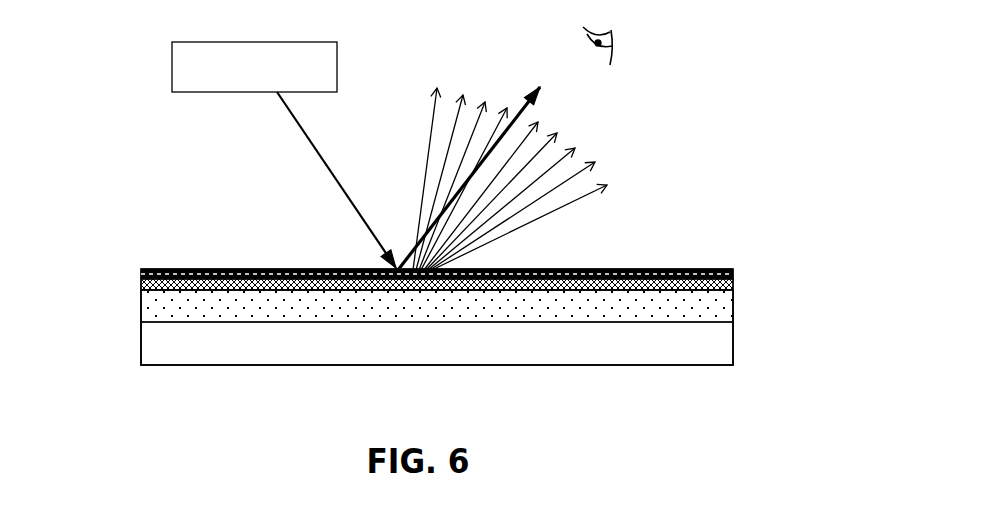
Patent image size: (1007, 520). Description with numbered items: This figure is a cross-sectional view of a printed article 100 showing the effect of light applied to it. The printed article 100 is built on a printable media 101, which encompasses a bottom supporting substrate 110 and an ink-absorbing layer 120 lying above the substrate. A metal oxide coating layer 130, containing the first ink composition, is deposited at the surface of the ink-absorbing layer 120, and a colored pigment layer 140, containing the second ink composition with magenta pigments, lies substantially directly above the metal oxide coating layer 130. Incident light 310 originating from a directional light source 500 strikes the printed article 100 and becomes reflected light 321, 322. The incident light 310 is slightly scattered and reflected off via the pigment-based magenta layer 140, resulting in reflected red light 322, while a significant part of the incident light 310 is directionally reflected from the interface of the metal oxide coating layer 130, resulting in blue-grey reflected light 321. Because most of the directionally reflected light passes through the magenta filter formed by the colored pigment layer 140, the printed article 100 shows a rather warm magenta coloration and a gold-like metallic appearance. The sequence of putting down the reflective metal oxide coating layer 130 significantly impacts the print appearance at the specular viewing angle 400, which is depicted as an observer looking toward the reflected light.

The printed article 100 is at (806, 163).
The printable media 101 is at (793, 290).
The bottom supporting substrate 110 is at (735, 330).
The ink-absorbing layer 120 is at (735, 312).
The metal oxide coating layer 130 is at (141, 284).
The colored pigment layer 140 is at (141, 273).
The incident light 310 is at (333, 186).
The reflected light 321 is at (580, 208).
The reflected light 322 is at (524, 93).
The specular viewing angle 400 is at (618, 43).
The directional light source 500 is at (254, 67).